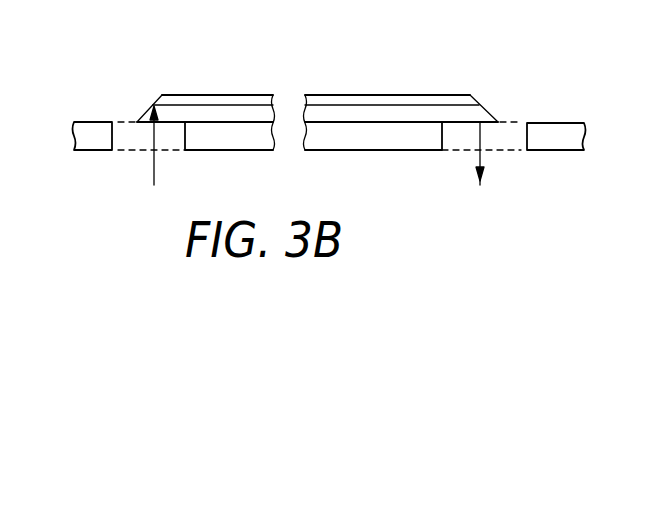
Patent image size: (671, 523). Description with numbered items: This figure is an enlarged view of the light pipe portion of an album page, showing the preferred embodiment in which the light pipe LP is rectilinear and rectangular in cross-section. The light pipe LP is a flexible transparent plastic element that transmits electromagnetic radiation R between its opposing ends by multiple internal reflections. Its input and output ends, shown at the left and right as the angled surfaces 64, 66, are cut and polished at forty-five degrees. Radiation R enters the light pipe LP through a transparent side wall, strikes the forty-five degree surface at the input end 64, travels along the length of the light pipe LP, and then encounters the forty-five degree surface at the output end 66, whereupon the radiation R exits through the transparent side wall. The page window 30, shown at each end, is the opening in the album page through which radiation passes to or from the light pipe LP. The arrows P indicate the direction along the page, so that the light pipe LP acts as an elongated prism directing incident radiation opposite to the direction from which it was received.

The page window 30 is at (125, 128).
The chamfered edge 64 is at (158, 98).
The chamfered edge 66 is at (473, 95).
The light pipe LP is at (318, 95).
The radiation R is at (393, 105).
The pressing direction P is at (55, 141).